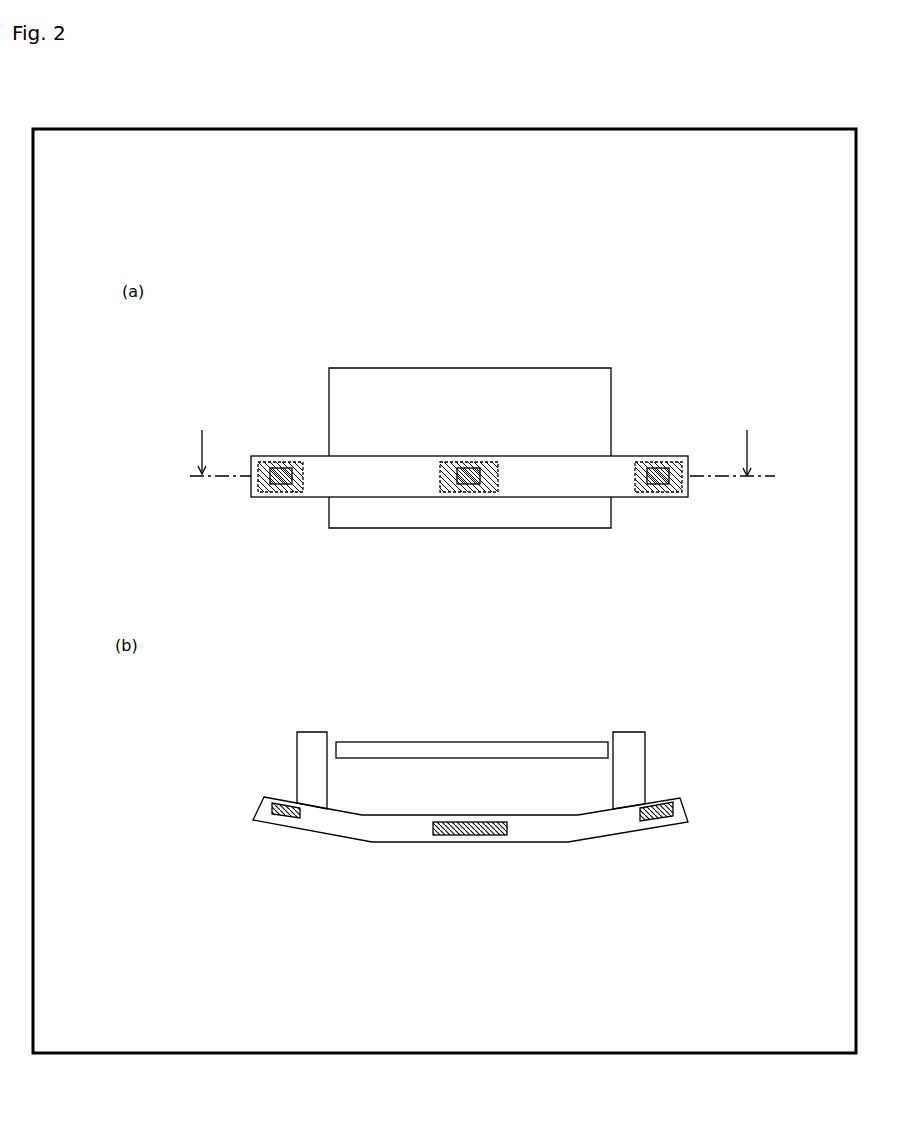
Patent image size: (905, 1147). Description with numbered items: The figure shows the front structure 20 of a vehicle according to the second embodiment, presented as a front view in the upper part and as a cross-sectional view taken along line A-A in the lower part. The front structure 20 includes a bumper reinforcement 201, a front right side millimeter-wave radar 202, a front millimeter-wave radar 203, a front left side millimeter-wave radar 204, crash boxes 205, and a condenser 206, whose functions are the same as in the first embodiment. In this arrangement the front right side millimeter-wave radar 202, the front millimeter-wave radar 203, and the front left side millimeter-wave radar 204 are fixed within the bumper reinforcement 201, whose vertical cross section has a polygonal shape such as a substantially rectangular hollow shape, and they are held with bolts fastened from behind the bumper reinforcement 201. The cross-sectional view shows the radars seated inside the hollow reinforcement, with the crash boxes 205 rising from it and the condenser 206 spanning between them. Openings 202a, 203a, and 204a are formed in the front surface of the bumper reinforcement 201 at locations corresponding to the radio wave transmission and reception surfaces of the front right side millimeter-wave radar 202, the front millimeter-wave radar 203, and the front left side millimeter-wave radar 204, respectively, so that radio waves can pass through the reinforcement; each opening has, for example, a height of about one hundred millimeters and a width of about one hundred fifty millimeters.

The front structure 20 is at (596, 332).
The bumper reinforcement 201 is at (377, 498).
The front right side millimeter-wave radar 202 is at (280, 496).
The opening 202a is at (277, 465).
The front millimeter-wave radar 203 is at (468, 498).
The opening 203a is at (460, 466).
The front left side millimeter-wave radar 204 is at (643, 498).
The opening 204a is at (657, 466).
The crash boxes 205 is at (307, 753).
The condenser 206 is at (462, 383).